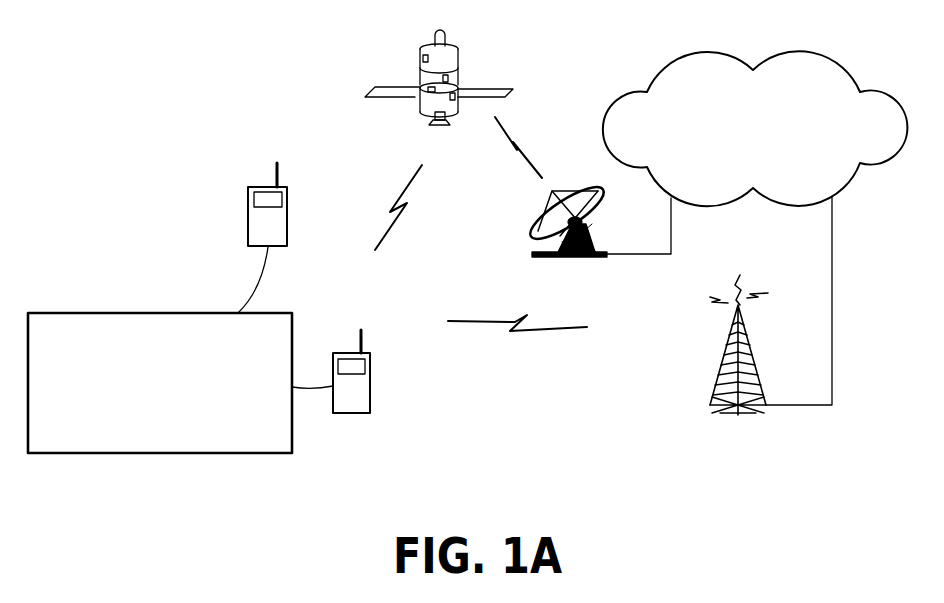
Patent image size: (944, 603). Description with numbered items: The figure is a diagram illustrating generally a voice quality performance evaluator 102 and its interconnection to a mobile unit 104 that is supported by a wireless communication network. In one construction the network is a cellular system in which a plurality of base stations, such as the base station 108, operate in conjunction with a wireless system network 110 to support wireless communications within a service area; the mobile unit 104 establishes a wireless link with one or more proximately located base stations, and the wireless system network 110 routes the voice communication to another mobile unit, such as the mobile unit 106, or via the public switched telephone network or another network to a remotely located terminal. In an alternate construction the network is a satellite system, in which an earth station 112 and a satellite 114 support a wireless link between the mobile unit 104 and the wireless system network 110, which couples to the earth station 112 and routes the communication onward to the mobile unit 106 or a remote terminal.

The voice quality performance evaluator 102 is at (87, 313).
The mobile unit 104 is at (370, 393).
The mobile unit 106 is at (248, 213).
The base station 108 is at (733, 417).
The wireless system network 110 is at (830, 60).
The earth station 112 is at (568, 257).
The satellite 114 is at (455, 45).